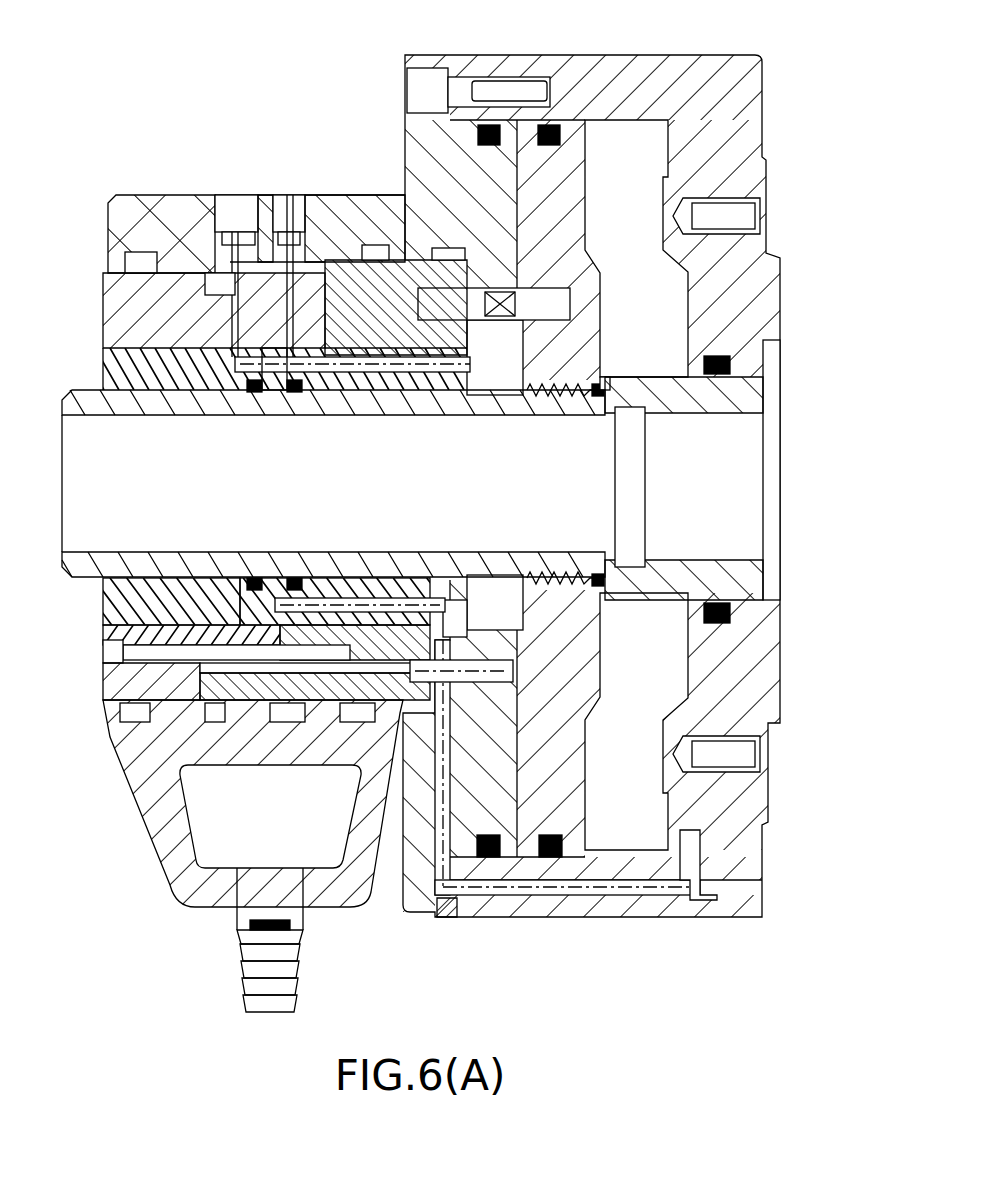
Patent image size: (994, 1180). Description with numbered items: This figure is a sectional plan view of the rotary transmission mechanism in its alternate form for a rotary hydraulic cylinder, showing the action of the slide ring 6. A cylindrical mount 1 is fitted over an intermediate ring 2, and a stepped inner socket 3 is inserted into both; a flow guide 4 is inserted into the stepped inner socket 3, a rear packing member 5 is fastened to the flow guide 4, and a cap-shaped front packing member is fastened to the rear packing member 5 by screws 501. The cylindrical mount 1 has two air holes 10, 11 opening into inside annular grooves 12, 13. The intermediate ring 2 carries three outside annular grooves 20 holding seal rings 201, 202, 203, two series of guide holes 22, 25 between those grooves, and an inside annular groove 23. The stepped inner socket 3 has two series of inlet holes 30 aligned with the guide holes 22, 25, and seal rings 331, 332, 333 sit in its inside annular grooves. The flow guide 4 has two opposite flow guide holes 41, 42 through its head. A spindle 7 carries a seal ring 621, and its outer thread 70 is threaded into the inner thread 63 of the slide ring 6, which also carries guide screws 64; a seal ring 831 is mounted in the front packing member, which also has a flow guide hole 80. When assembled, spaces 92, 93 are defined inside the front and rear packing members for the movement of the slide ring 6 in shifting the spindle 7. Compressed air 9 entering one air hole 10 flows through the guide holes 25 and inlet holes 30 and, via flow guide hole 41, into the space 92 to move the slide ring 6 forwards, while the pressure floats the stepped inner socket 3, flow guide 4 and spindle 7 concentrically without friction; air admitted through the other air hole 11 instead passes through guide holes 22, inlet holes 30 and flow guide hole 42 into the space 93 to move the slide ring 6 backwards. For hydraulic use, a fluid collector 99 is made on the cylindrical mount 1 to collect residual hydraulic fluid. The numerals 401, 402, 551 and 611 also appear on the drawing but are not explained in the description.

The cylindrical mount 1 is at (350, 205).
The intermediate ring 2 is at (165, 245).
The stepped inner socket 3 is at (110, 325).
The flow guide 4 is at (138, 400).
The rear packing member 5 is at (455, 115).
The slide ring 6 is at (570, 128).
The spindle 7 is at (748, 400).
The compressed air 9 is at (295, 245).
The air hole 10 is at (225, 205).
The air hole 11 is at (260, 200).
The inside annular groove 12 is at (290, 205).
The inside annular groove 13 is at (235, 275).
The outside annular groove 20 is at (360, 213).
The guide hole 22 is at (305, 255).
The inside annular groove 23 is at (270, 392).
The guide hole 25 is at (225, 262).
The inlet hole 30 is at (225, 392).
The flow guide hole 41 is at (355, 400).
The flow guide hole 42 is at (400, 608).
The inner thread 63 is at (555, 575).
The guide screw 64 is at (545, 398).
The outer thread 70 is at (605, 377).
The flow guide hole 80 is at (625, 895).
The space 92 is at (500, 397).
The space 93 is at (667, 372).
The fluid collector 99 is at (193, 897).
The seal ring 201 is at (273, 770).
The seal ring 202 is at (200, 760).
The seal ring 203 is at (207, 748).
The seal ring 331 is at (115, 580).
The seal ring 332 is at (180, 580).
The seal ring 333 is at (320, 600).
The bearing 401 is at (298, 578).
The bearing 402 is at (253, 578).
The screw 501 is at (420, 85).
The bolt 551 is at (490, 122).
The seal 611 is at (547, 122).
The seal ring 621 is at (607, 383).
The seal ring 831 is at (778, 330).